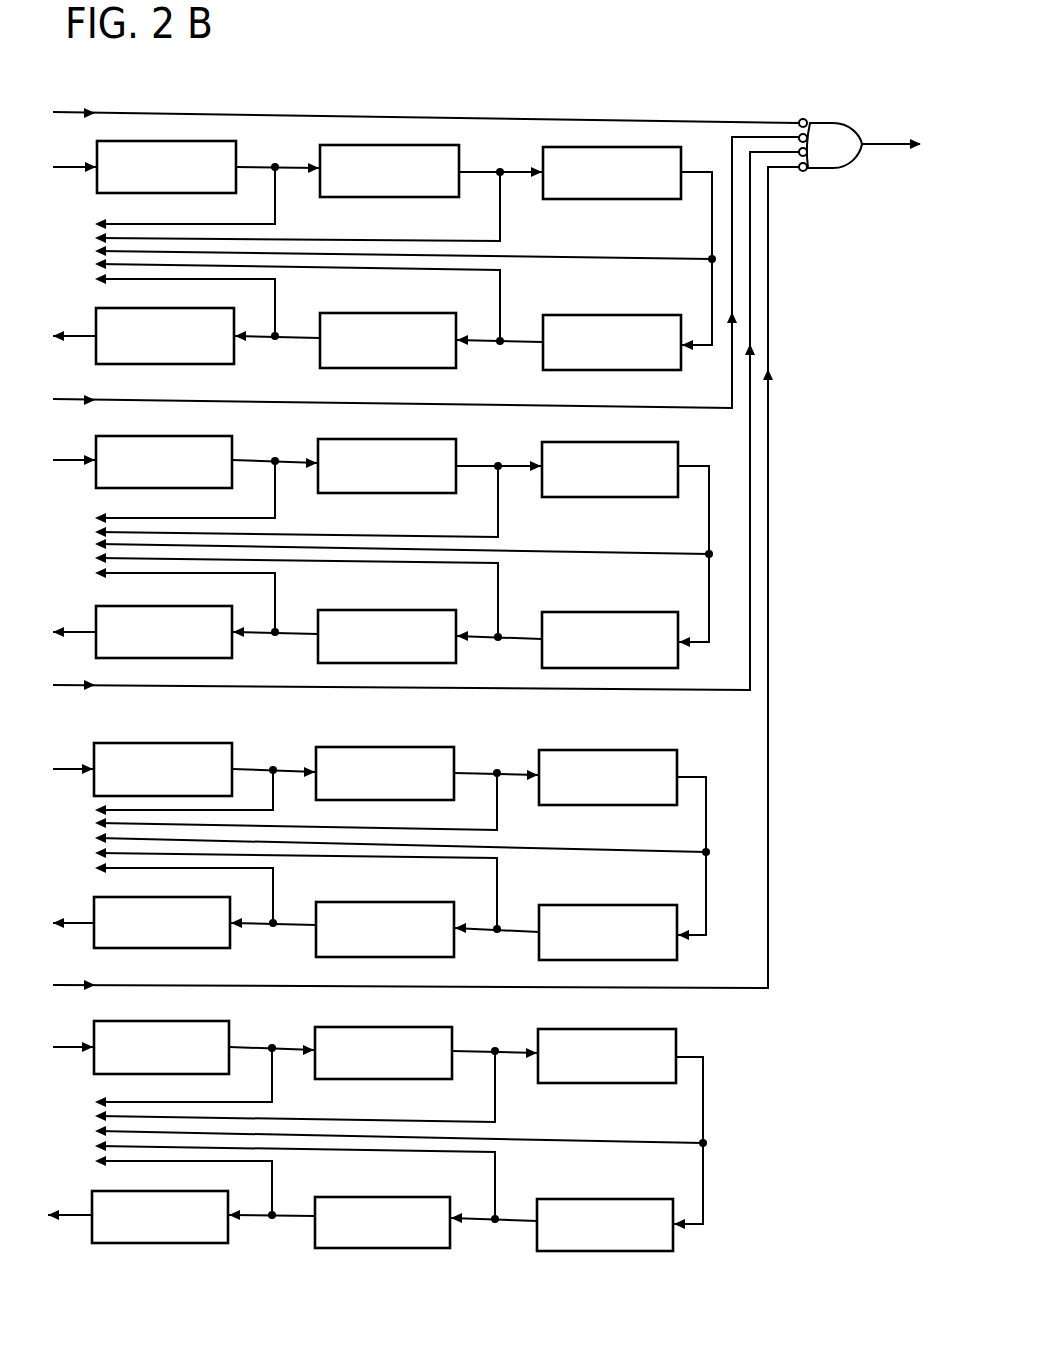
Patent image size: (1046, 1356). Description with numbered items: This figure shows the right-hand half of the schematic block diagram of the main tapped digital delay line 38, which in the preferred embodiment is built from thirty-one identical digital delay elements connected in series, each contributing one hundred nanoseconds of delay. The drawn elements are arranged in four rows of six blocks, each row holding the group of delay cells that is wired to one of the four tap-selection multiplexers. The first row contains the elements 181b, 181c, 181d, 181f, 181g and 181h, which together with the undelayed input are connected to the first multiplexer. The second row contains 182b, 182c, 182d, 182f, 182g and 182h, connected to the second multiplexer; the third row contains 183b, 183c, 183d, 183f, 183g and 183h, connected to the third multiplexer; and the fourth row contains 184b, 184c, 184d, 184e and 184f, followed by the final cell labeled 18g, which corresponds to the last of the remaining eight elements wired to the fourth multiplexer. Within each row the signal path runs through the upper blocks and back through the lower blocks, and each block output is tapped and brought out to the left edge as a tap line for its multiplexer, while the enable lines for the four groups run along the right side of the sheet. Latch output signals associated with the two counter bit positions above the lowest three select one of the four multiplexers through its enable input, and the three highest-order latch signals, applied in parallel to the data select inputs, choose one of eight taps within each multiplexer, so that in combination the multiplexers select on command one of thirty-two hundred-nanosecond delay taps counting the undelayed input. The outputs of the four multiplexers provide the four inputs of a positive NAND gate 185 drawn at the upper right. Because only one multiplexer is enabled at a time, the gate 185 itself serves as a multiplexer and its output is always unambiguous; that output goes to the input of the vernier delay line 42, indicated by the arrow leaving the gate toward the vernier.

The main tapped digital delay line 38 is at (524, 95).
The positive NAND gate 185 is at (810, 121).
The vernier delay line 42 is at (878, 184).
The digital delay element 181b is at (166, 167).
The digital delay element 181c is at (389, 171).
The digital delay element 181d is at (612, 173).
The digital delay element 181f is at (165, 336).
The digital delay element 181g is at (388, 340).
The digital delay element 181h is at (612, 342).
The digital delay element 182b is at (164, 462).
The digital delay element 182c is at (387, 466).
The digital delay element 182d is at (610, 469).
The digital delay element 182f is at (164, 632).
The digital delay element 182g is at (387, 636).
The digital delay element 182h is at (610, 640).
The digital delay element 183b is at (163, 769).
The digital delay element 183c is at (385, 773).
The digital delay element 183d is at (608, 777).
The digital delay element 183f is at (162, 922).
The digital delay element 183g is at (385, 929).
The digital delay element 183h is at (608, 932).
The digital delay element 184b is at (161, 1047).
The digital delay element 184c is at (383, 1053).
The digital delay element 184d is at (607, 1056).
The digital delay element 184e is at (160, 1217).
The digital delay element 184f is at (382, 1222).
The flip-flop stage 18g is at (605, 1225).